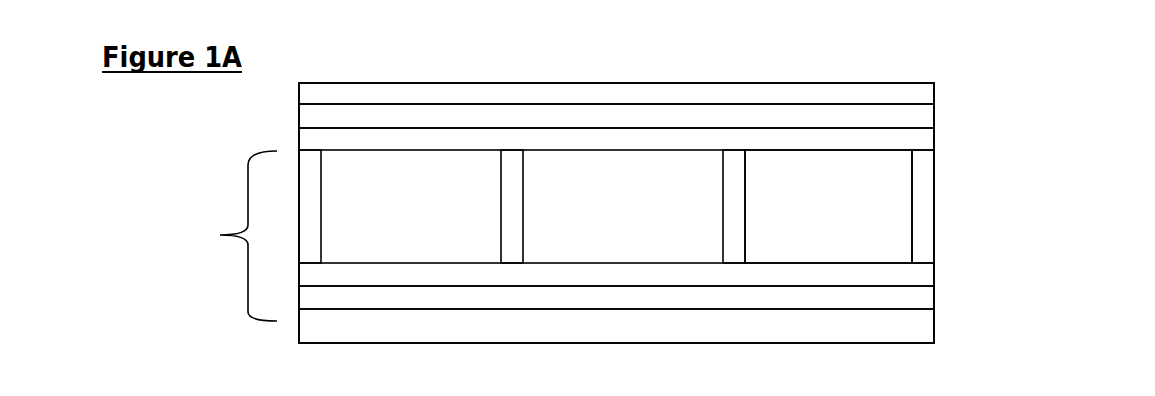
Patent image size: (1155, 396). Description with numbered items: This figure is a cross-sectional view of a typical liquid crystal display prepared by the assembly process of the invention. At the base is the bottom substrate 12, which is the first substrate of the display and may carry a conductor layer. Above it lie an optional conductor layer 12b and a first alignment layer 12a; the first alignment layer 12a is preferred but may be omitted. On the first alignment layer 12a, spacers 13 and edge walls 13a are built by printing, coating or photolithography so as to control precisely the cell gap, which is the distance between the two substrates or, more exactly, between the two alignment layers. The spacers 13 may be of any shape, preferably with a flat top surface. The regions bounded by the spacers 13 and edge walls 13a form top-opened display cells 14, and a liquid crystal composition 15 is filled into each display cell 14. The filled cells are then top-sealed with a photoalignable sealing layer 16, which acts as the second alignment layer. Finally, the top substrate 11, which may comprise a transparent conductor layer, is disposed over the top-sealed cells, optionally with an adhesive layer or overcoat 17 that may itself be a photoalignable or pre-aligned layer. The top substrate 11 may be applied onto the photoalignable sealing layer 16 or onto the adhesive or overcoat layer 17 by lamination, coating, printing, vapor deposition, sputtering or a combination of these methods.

The top substrate 11 is at (912, 93).
The adhesive layer or overcoat 17 is at (912, 115).
The photoalignable sealing layer 16 is at (923, 138).
The display cell 14 is at (645, 175).
The edge wall 13a is at (318, 159).
The spacer 13 is at (724, 161).
The liquid crystal composition 15 is at (790, 205).
The first alignment layer 12a is at (912, 276).
The conductor layer 12b is at (912, 298).
The bottom substrate 12 is at (912, 320).